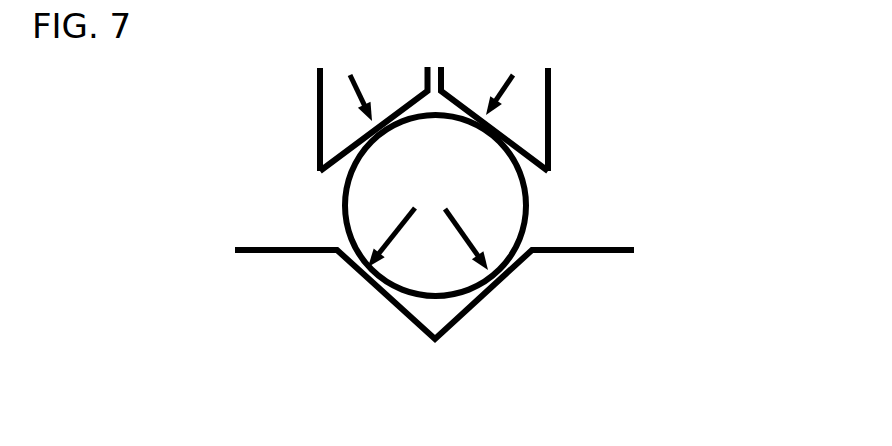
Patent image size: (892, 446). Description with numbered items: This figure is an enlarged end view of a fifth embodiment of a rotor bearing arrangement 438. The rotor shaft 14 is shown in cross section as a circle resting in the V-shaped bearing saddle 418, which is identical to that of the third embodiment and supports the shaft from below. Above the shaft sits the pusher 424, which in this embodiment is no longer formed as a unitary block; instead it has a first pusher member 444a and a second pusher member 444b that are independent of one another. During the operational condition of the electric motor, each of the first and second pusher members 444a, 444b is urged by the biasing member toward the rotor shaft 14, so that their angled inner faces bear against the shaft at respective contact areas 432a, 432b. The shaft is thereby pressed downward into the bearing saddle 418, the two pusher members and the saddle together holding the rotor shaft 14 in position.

The rotor bearing arrangement 438 is at (697, 95).
The pusher 424 is at (445, 105).
The first pusher member 444a is at (324, 78).
The second pusher member 444b is at (542, 99).
The contact area 432a is at (344, 133).
The contact area 432b is at (524, 137).
The rotor shaft 14 is at (544, 202).
The bearing saddle 418 is at (399, 343).